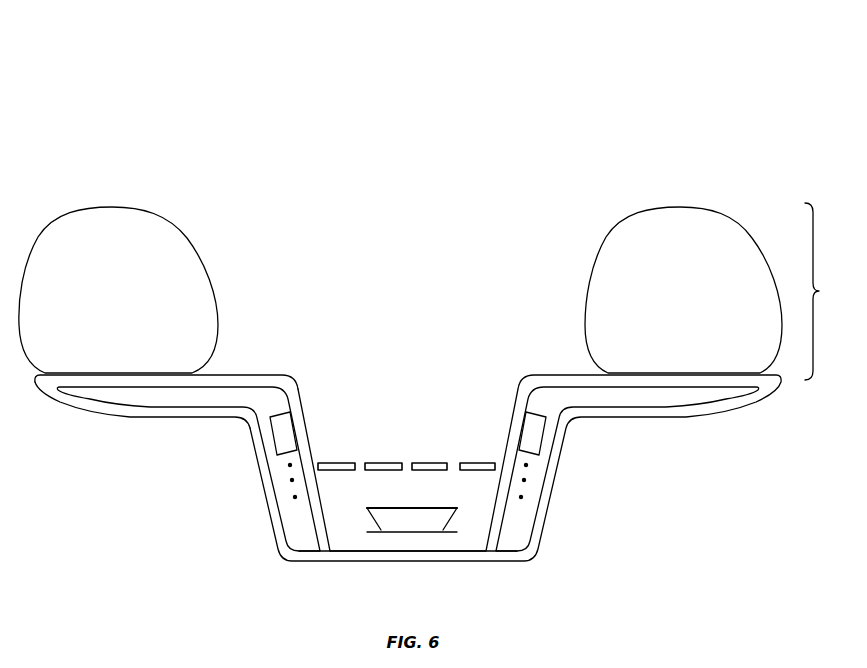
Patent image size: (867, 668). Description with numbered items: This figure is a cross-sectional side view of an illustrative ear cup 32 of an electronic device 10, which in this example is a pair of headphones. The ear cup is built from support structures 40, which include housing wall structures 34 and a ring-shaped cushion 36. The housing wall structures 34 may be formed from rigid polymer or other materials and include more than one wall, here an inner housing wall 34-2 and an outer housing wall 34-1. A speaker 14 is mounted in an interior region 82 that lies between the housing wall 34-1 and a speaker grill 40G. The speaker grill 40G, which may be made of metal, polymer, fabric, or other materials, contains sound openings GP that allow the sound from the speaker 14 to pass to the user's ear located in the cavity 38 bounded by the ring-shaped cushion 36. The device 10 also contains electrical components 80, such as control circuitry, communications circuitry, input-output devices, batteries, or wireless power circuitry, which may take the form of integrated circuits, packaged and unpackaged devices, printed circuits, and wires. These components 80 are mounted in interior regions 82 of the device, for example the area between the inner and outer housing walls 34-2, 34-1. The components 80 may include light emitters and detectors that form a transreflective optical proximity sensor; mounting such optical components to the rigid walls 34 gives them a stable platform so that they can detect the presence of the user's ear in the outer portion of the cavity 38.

The electronic device 10 is at (721, 78).
The speaker 14 is at (420, 524).
The ear cup 32 is at (207, 525).
The housing wall structures 34 is at (533, 533).
The outer housing wall 34-1 is at (174, 413).
The inner housing wall 34-2 is at (257, 380).
The ring-shaped cushion 36 is at (118, 220).
The cavity 38 is at (521, 236).
The support structures 40 is at (825, 291).
The speaker grill 40G is at (337, 460).
The openings GP is at (449, 451).
The electrical components 80 is at (282, 438).
The interior region 82 is at (297, 533).